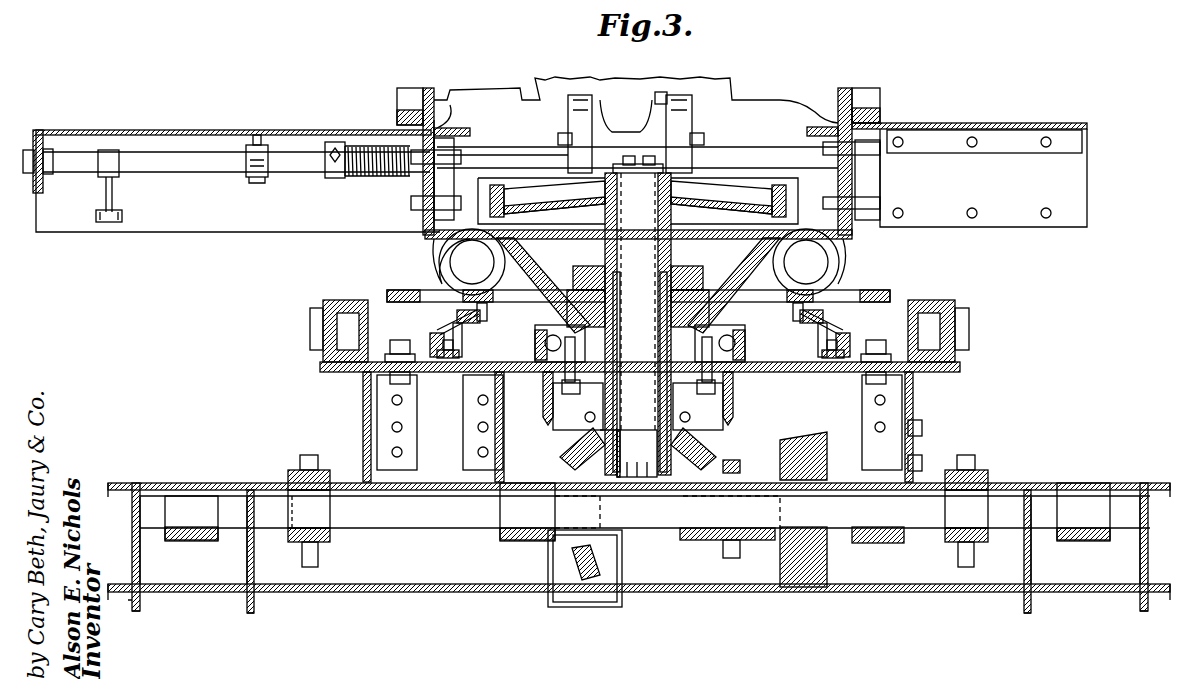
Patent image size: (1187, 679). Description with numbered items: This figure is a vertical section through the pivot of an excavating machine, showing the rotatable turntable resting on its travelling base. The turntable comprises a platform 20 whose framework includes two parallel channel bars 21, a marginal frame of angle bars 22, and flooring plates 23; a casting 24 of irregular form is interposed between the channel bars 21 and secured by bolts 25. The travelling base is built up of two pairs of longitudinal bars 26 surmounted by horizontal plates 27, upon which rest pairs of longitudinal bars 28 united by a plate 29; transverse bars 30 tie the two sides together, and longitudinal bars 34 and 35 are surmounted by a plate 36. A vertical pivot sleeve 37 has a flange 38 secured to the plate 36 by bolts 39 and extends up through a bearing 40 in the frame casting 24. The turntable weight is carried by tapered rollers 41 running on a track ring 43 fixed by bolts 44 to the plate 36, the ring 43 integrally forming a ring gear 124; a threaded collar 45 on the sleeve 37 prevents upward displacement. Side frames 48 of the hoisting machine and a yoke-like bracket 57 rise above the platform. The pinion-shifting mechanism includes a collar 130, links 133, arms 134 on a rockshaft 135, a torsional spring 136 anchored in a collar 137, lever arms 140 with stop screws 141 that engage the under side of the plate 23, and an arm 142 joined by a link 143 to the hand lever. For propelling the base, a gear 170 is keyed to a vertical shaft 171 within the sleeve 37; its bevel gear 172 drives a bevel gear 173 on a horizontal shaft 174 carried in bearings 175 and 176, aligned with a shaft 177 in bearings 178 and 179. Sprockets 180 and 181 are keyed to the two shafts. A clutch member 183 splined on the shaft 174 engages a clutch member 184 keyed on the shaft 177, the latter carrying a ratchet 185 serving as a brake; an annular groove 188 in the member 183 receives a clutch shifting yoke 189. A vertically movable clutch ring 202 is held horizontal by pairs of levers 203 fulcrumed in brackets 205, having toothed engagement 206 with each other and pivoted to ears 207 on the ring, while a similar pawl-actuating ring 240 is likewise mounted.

The platform 20 is at (27, 170).
The channel bars 21 is at (422, 186).
The angle bars 22 is at (46, 136).
The plates 23 is at (170, 130).
The casting 24 is at (446, 198).
The bolts 25 is at (452, 164).
The longitudinal bars 26 is at (136, 612).
The horizontal plates 27 is at (198, 592).
The longitudinal bars 28 is at (140, 560).
The plate 29 is at (138, 483).
The transverse bars 30 is at (443, 578).
The longitudinal bars 34 is at (363, 415).
The longitudinal bars 35 is at (470, 393).
The plate 36 is at (770, 373).
The sleeve 37 is at (706, 415).
The flange 38 is at (556, 362).
The bolts 39 is at (738, 392).
The bearing 40 is at (623, 337).
The tapered rollers 41 is at (434, 251).
The ring 43 is at (341, 300).
The bolts 44 is at (398, 338).
The collar 45 is at (734, 285).
The side frames 48 is at (408, 90).
The yoke-like bracket 57 is at (616, 80).
The ring gear 124 is at (310, 330).
The collar 130 is at (663, 93).
The links 133 is at (570, 110).
The arms 134 is at (565, 136).
The rockshaft 135 is at (180, 170).
The torsional spring 136 is at (367, 177).
The collar 137 is at (337, 141).
The arms 140 is at (268, 162).
The stop screw 141 is at (258, 142).
The arm 142 is at (116, 195).
The link 143 is at (117, 222).
The gear 170 is at (492, 200).
The vertical shaft 171 is at (628, 233).
The bevel gear 172 is at (700, 442).
The bevel gear 173 is at (585, 568).
The horizontal shaft 174 is at (392, 528).
The bearing 175 is at (184, 541).
The bearing 176 is at (549, 527).
The shaft 177 is at (925, 528).
The bearing 178 is at (1065, 541).
The bearing 179 is at (878, 548).
The sprocket 180 is at (318, 558).
The sprocket 181 is at (976, 555).
The clutch member 183 is at (706, 542).
The clutch member 184 is at (819, 516).
The ratchet 185 is at (805, 450).
The annular groove 188 is at (740, 470).
The clutch shifting yoke 189 is at (728, 558).
The clutch ring 202 is at (482, 316).
The levers 203 is at (466, 326).
The brackets 205 is at (458, 350).
The toothed engagement 206 is at (440, 346).
The ears 207 is at (452, 316).
The pawl-actuating ring 240 is at (400, 283).